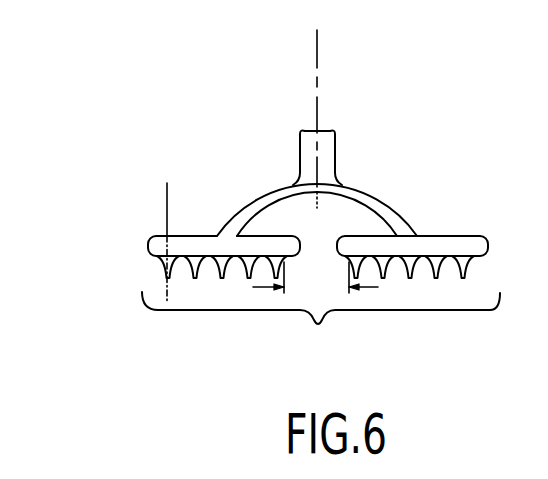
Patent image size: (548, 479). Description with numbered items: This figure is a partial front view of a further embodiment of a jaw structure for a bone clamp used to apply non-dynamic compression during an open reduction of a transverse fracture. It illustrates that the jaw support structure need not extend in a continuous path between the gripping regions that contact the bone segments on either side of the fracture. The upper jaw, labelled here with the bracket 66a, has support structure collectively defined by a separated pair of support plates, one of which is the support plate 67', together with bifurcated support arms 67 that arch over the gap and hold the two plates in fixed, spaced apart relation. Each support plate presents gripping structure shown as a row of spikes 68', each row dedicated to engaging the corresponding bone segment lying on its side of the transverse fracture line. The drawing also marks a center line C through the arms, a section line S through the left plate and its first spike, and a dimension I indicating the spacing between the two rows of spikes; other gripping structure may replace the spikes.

The fastener strip 66a is at (321, 249).
The bifurcated support arms 67 is at (317, 182).
The support plate 67' is at (224, 213).
The spikes 68' is at (222, 311).
The center line C is at (318, 61).
The section plane S is at (167, 204).
The tooth spacing dimension I is at (321, 293).